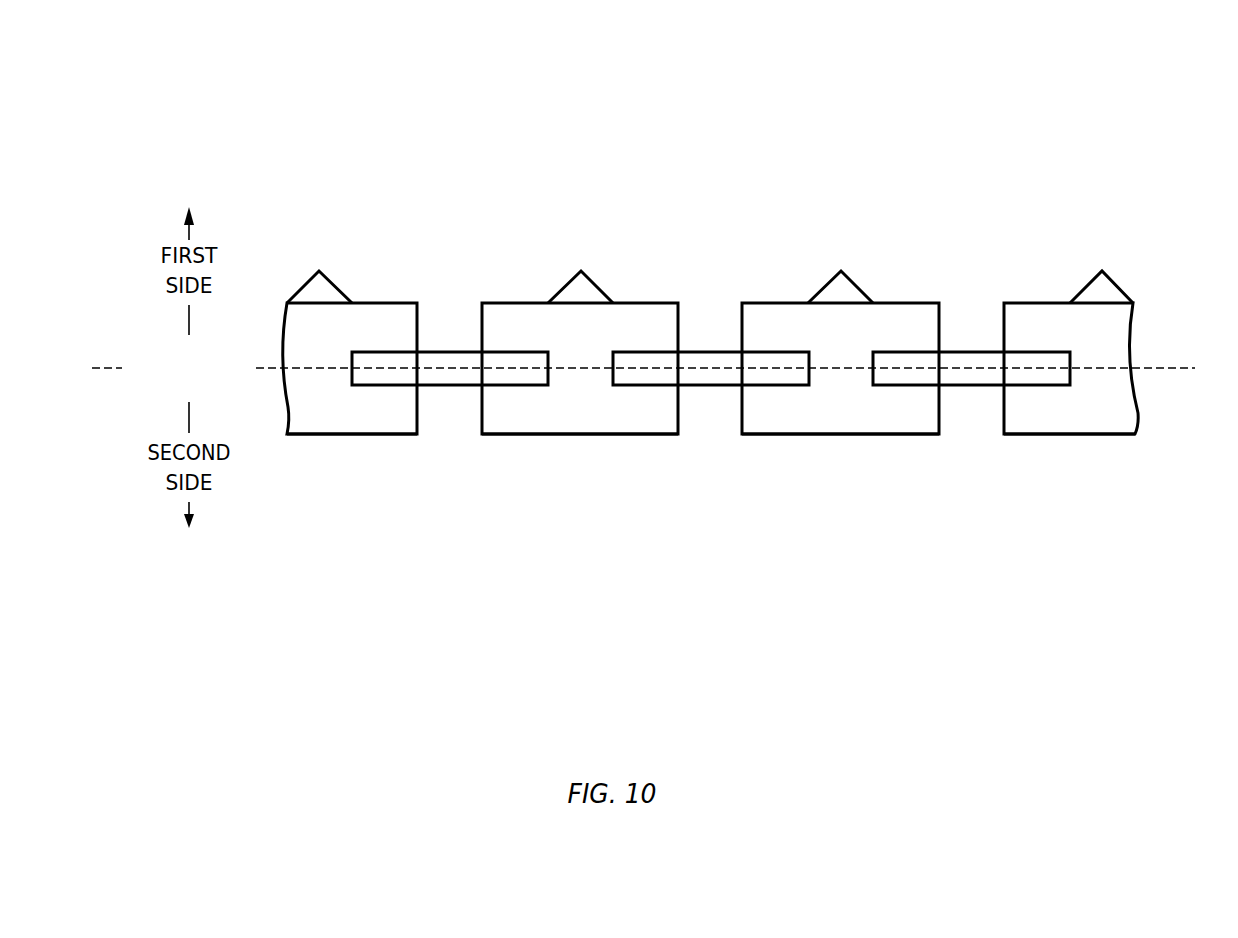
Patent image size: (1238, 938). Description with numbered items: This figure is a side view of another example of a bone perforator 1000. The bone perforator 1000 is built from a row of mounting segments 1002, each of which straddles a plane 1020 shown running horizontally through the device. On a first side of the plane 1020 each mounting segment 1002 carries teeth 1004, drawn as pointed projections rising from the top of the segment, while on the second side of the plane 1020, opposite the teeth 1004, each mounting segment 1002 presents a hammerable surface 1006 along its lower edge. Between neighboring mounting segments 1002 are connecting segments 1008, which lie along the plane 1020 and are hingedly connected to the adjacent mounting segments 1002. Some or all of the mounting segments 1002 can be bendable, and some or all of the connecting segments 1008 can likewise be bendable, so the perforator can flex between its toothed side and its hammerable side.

The bone perforator 1000 is at (230, 144).
The mounting segment 1002 is at (297, 347).
The teeth 1004 is at (319, 270).
The hammerable surface 1006 is at (319, 436).
The connecting segment 1008 is at (428, 379).
The plane 1020 is at (643, 368).